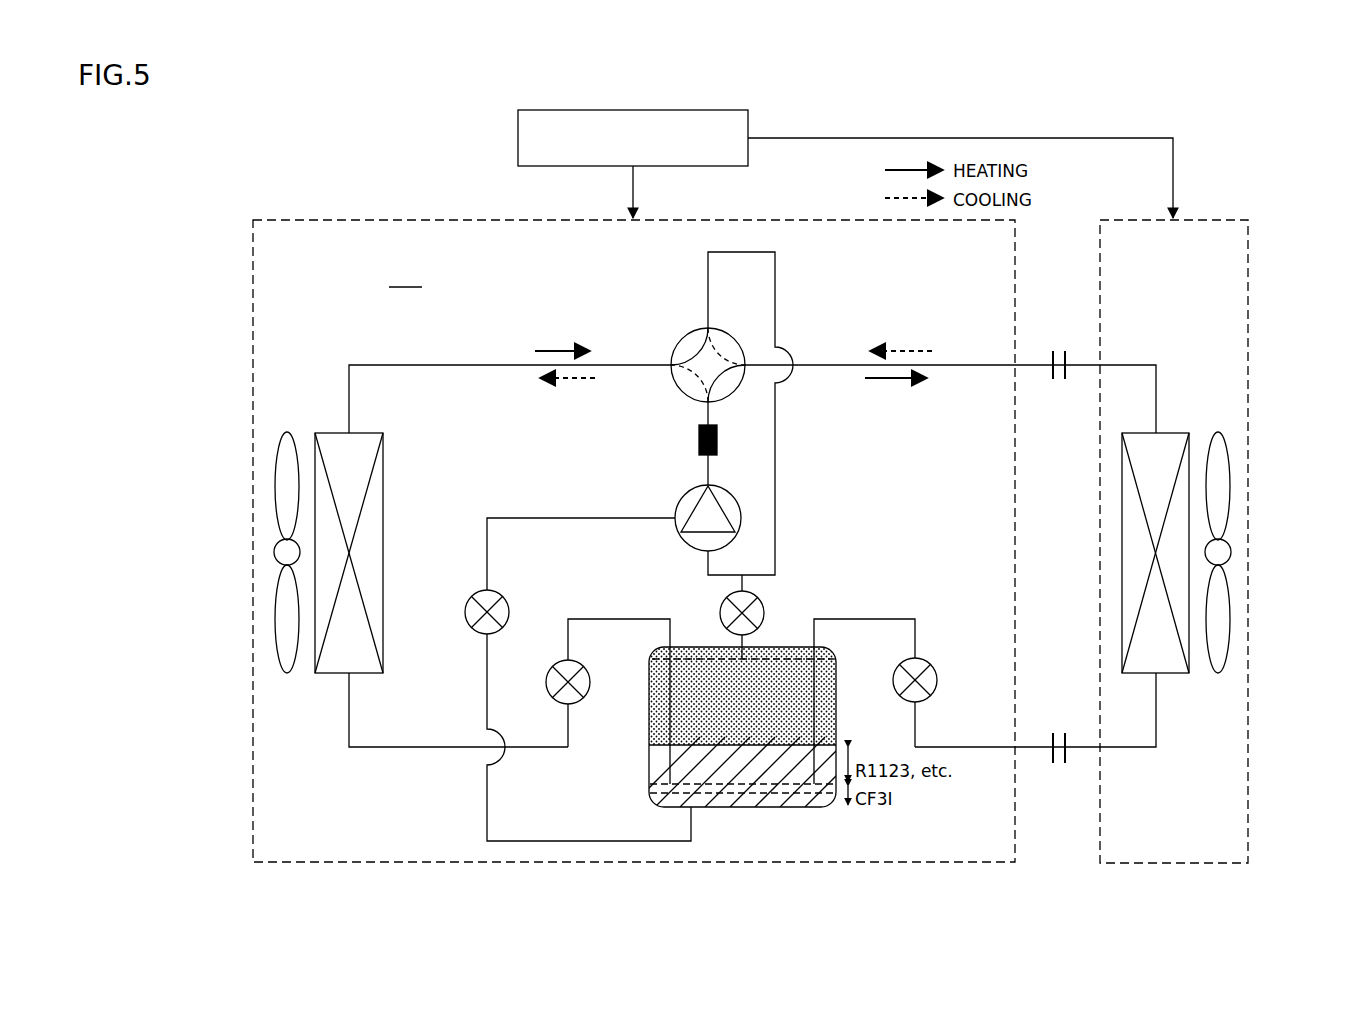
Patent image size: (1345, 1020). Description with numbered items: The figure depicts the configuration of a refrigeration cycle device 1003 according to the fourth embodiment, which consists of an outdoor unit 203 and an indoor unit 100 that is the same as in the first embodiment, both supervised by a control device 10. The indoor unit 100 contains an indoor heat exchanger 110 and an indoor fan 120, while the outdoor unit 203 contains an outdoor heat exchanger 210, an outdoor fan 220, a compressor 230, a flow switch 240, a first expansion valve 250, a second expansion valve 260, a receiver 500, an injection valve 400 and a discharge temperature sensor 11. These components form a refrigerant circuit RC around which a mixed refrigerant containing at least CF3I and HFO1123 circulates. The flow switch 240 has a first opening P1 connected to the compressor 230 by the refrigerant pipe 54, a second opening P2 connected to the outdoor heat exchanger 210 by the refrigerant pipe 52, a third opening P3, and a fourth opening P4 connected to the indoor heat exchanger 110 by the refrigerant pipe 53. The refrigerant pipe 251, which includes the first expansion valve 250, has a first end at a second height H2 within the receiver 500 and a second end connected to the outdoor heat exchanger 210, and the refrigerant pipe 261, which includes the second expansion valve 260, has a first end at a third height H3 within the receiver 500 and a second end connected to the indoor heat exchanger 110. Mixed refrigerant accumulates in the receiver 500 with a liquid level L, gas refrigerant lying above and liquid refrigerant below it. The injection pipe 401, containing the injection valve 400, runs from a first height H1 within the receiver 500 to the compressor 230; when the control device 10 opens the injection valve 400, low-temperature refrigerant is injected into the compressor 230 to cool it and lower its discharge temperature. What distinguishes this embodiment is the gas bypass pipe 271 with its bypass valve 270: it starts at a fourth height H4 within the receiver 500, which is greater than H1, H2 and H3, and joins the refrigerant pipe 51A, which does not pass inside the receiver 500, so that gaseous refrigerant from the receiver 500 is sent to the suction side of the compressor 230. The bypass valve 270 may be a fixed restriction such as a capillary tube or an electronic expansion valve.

The control device 10 is at (697, 110).
The refrigeration cycle device 1003 is at (1277, 132).
The outdoor unit 203 is at (380, 220).
The indoor unit 100 is at (1214, 220).
The refrigerant circuit RC is at (405, 277).
The refrigerant pipe 51A is at (776, 272).
The flow switch 240 is at (680, 340).
The first opening P1 is at (730, 414).
The second opening P2 is at (650, 357).
The third opening P3 is at (728, 317).
The fourth opening P4 is at (760, 357).
The refrigerant pipe 52 is at (468, 364).
The refrigerant pipe 53 is at (981, 364).
The outdoor heat exchanger 210 is at (331, 432).
The outdoor fan 220 is at (275, 620).
The indoor heat exchanger 110 is at (1168, 432).
The indoor fan 120 is at (1238, 494).
The discharge temperature sensor 11 is at (697, 440).
The refrigerant pipe 54 is at (705, 472).
The compressor 230 is at (685, 544).
The injection valve 400 is at (470, 596).
The injection pipe 401 is at (486, 806).
The bypass valve 270 is at (763, 602).
The gas bypass pipe 271 is at (735, 652).
The first expansion valve 250 is at (583, 668).
The refrigerant pipe 251 is at (528, 749).
The second expansion valve 260 is at (938, 682).
The refrigerant pipe 261 is at (862, 619).
The receiver 500 is at (762, 808).
The liquid level L is at (836, 745).
The first height H1 is at (660, 795).
The second height H2 is at (650, 784).
The third height H3 is at (840, 785).
The fourth height H4 is at (836, 660).